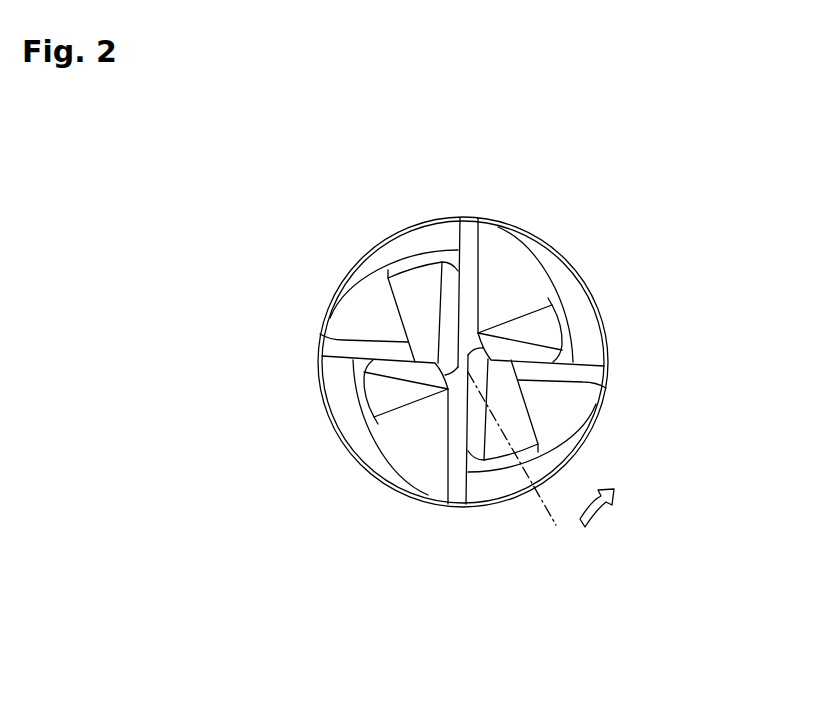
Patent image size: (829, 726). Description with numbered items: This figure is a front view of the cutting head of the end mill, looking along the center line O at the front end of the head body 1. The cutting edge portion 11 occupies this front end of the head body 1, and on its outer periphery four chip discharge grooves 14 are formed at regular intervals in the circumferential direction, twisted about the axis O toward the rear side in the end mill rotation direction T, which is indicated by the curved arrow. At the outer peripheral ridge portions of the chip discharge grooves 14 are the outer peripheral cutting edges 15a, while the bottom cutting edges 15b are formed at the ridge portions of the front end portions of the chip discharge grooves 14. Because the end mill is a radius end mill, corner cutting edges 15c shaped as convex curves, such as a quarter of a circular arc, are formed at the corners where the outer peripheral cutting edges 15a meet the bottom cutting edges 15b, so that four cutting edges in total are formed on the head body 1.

The head body 1 is at (390, 200).
The cutting edge portion 11 is at (463, 320).
The chip discharge grooves 14 is at (386, 253).
The outer peripheral cutting edges 15a is at (478, 220).
The bottom cutting edges 15b is at (447, 255).
The corner cutting edges 15c is at (460, 220).
The center line O is at (517, 464).
The end mill rotation direction T is at (597, 519).